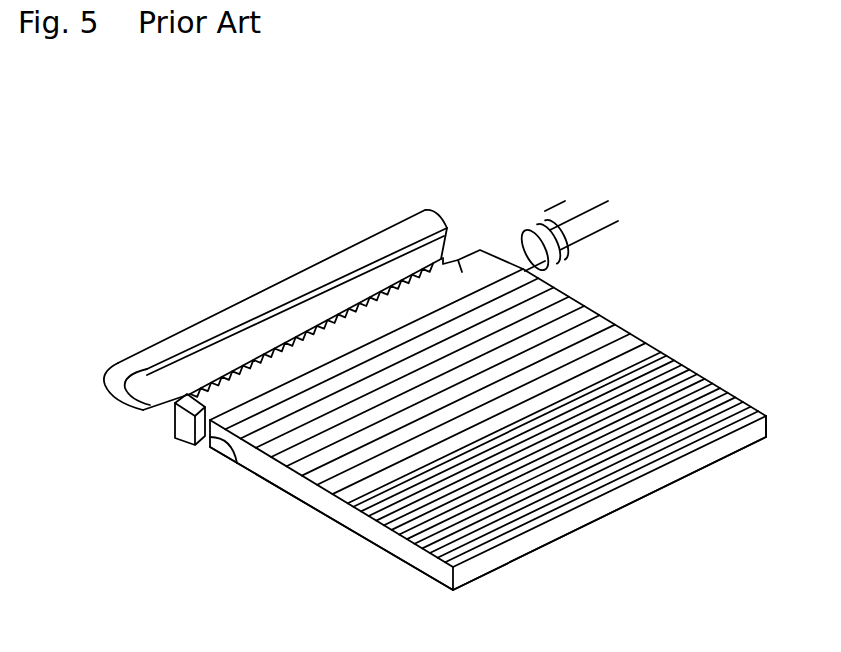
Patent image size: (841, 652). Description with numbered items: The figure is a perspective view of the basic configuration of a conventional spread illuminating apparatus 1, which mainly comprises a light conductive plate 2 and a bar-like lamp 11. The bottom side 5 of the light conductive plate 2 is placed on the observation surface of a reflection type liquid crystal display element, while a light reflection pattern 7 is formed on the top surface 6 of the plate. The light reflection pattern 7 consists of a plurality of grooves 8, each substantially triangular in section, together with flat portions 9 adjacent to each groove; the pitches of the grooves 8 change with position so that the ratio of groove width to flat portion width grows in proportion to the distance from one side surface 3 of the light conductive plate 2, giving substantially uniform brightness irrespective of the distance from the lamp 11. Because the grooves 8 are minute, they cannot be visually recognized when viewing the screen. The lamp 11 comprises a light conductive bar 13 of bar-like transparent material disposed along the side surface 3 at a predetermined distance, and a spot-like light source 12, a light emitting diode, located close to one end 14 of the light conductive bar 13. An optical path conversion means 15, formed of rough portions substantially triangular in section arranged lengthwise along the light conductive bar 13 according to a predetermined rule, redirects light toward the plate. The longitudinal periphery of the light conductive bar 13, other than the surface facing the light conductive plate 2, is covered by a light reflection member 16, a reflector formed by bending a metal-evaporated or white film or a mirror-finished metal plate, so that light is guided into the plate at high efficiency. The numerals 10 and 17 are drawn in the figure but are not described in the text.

The spread illuminating apparatus 1 is at (547, 553).
The light conductive plate 2 is at (423, 563).
The side surface 3 is at (240, 460).
The bottom side 5 is at (323, 513).
The top surface 6 is at (760, 417).
The light reflection pattern 7 is at (562, 401).
The grooves 8 is at (697, 377).
The flat portions 9 is at (737, 397).
The side face 10 is at (690, 467).
The bar-like lamp 11 is at (540, 185).
The spot-like light source 12 is at (553, 227).
The light conductive bar 13 is at (470, 272).
The one end 14 is at (532, 266).
The optical path conversion means 15 is at (340, 308).
The light reflection member 16 is at (163, 350).
The spacer block 17 is at (188, 418).